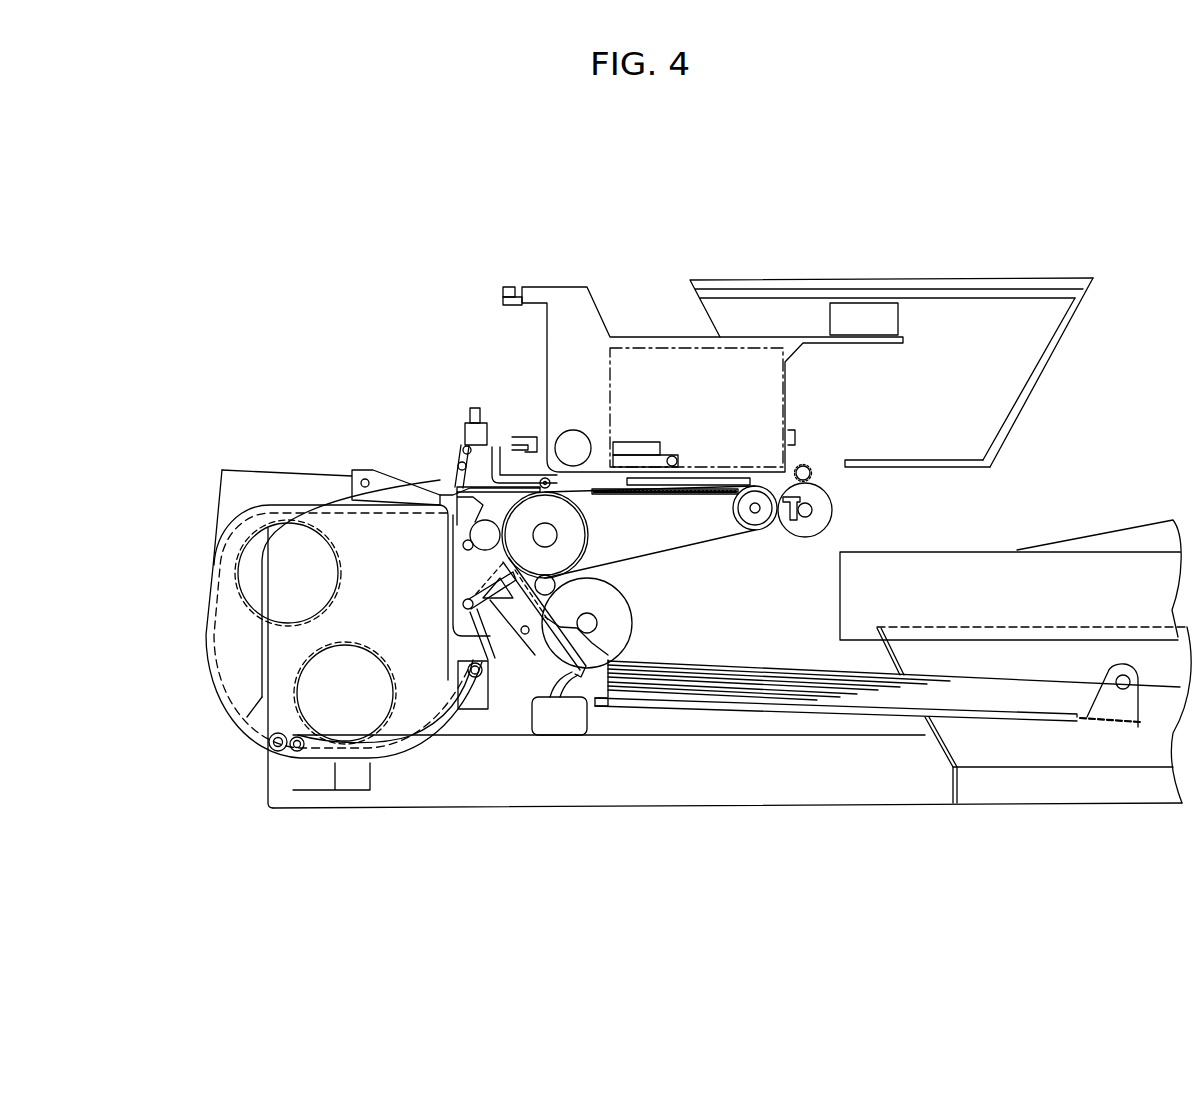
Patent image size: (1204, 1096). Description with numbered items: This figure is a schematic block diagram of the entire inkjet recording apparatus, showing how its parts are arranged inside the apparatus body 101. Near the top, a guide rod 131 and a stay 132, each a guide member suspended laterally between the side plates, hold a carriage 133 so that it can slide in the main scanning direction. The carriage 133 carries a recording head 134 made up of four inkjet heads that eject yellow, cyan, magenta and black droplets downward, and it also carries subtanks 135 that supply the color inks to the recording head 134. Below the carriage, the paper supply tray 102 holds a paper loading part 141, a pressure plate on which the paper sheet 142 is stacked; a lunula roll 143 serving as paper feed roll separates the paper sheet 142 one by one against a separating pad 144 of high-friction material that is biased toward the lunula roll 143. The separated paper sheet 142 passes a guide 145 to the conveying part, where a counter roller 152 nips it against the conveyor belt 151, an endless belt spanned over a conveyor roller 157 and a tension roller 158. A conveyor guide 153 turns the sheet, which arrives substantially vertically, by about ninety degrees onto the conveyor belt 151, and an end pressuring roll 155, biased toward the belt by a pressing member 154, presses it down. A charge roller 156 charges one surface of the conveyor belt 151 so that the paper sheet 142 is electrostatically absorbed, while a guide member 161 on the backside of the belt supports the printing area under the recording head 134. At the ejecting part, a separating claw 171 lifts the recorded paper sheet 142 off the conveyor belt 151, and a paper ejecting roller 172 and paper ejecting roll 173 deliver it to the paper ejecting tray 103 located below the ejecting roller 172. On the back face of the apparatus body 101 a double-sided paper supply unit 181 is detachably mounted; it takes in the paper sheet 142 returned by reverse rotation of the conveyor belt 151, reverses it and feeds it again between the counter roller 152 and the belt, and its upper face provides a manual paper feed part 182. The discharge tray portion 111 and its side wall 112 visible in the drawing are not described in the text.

The apparatus body 101 is at (940, 184).
The paper supply tray 102 is at (1026, 779).
The paper ejecting tray 103 is at (1078, 568).
The discharge tray 111 is at (968, 285).
The tray side wall 112 is at (1050, 353).
The guide rod 131 is at (571, 446).
The stay 132 is at (508, 286).
The carriage 133 is at (588, 318).
The recording head 134 is at (720, 472).
The subtanks 135 is at (698, 358).
The paper loading part 141 is at (735, 705).
The paper sheet 142 is at (792, 685).
The lunula roll 143 is at (585, 628).
The separating pad 144 is at (560, 702).
The guide 145 is at (522, 642).
The conveyor belt 151 is at (705, 545).
The counter roller 152 is at (482, 502).
The conveyor guide 153 is at (458, 484).
The pressing member 154 is at (465, 428).
The end pressuring roll 155 is at (541, 480).
The charge roller 156 is at (505, 577).
The conveyor roller 157 is at (575, 535).
The tension roller 158 is at (740, 506).
The guide member 161 is at (680, 495).
The separating claw 171 is at (790, 523).
The paper ejecting roller 172 is at (833, 502).
The paper ejecting roll 173 is at (807, 465).
The double-sided paper supply unit 181 is at (240, 485).
The manual paper feed part 182 is at (362, 468).